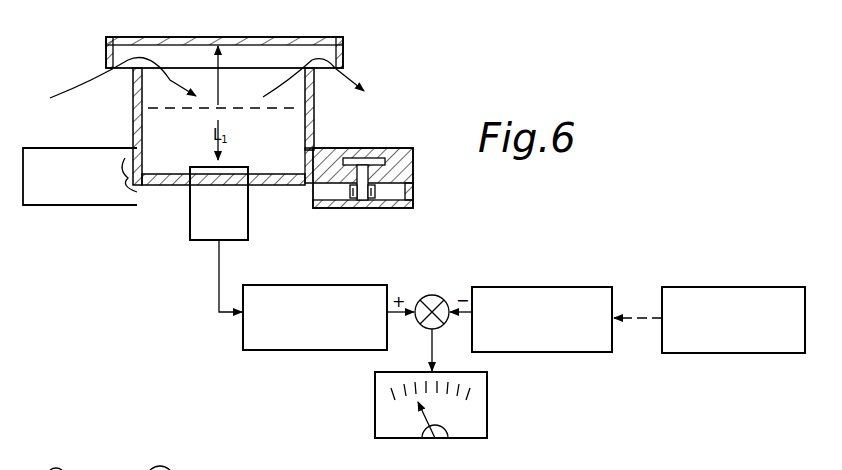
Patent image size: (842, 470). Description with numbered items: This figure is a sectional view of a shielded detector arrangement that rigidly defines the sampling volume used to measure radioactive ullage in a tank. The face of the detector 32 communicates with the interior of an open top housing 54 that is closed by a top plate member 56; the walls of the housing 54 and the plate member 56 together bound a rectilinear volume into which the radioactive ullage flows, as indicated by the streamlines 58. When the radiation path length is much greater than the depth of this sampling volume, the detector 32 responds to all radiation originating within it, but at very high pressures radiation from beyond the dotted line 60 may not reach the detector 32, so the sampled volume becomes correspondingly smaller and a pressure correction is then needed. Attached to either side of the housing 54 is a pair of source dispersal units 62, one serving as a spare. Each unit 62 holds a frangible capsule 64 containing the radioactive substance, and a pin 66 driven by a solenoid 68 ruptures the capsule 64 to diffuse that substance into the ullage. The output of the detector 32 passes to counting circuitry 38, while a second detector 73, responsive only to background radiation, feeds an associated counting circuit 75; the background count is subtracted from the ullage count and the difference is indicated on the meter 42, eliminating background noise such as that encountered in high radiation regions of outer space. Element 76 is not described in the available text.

The top plate member 56 is at (277, 33).
The streamlines 58 is at (100, 83).
The open top housing 54 is at (313, 97).
The dotted line 60 is at (188, 113).
The source dispersal units 62 is at (92, 226).
The frangible capsule 64 is at (352, 158).
The pin 66 is at (372, 180).
The solenoid 68 is at (372, 193).
The detector 32 is at (248, 235).
The counting circuitry 38 is at (310, 350).
The meter 42 is at (487, 402).
The counting circuit 75 is at (580, 287).
The second detector 73 is at (745, 287).
The element 76 is at (111, 469).